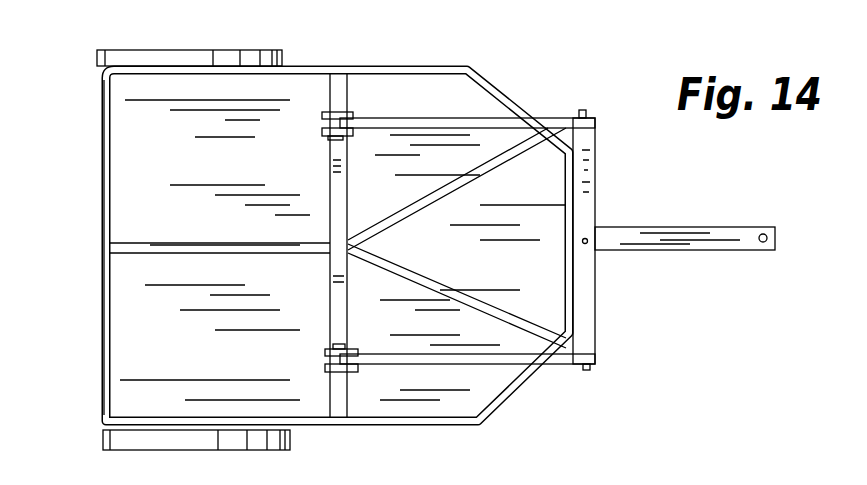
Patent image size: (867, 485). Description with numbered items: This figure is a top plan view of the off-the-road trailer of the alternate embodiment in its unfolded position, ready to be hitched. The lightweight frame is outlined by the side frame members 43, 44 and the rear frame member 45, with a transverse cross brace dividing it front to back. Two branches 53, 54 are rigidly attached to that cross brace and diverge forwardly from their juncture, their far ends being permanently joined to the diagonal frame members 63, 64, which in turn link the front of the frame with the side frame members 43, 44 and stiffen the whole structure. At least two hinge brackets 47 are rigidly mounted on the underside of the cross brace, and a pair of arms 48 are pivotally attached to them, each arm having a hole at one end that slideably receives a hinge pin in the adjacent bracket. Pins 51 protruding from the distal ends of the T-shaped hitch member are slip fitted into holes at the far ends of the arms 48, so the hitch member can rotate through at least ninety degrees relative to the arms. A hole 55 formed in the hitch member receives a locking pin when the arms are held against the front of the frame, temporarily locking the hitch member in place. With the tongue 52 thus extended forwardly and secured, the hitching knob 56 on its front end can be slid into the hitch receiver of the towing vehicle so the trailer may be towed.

The side frame member 43 is at (430, 67).
The side frame member 44 is at (420, 428).
The rear frame member 45 is at (101, 160).
The hinge brackets 47 is at (322, 130).
The arms 48 is at (428, 120).
The pins 51 is at (585, 110).
The tongue 52 is at (707, 252).
The branch 53 is at (500, 166).
The branch 54 is at (498, 318).
The hole 55 is at (588, 238).
The hitching knob 56 is at (773, 248).
The diagonal frame member 63 is at (507, 100).
The diagonal frame member 64 is at (505, 395).